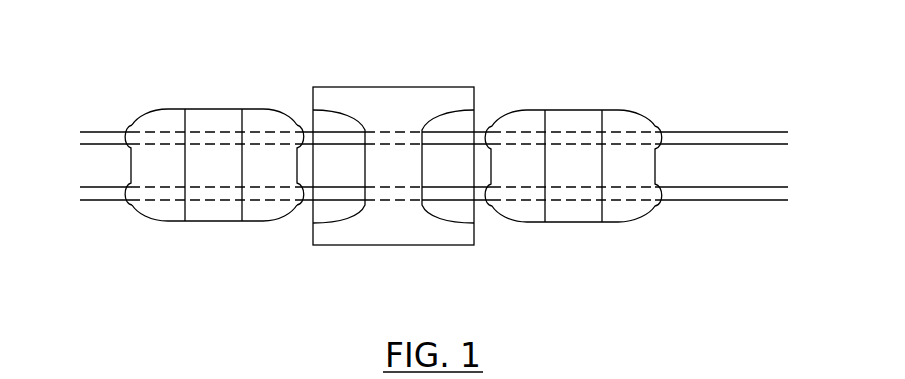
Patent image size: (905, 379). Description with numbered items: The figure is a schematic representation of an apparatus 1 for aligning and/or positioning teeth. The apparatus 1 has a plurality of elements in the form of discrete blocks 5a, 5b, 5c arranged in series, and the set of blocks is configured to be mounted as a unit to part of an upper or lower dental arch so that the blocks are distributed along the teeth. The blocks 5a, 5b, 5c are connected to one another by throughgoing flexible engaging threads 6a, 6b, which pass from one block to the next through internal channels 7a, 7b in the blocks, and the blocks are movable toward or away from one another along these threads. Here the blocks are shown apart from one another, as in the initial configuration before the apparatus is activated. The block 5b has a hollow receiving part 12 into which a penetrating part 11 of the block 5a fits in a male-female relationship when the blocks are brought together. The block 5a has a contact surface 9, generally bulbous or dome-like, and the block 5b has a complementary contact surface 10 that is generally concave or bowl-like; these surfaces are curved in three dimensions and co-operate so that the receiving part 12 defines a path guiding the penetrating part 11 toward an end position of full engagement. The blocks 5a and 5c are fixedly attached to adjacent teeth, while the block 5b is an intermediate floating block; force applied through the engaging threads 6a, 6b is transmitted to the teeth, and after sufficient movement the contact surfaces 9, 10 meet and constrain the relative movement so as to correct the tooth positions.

The apparatus 1 is at (504, 70).
The block 5a is at (210, 179).
The block 5b is at (376, 172).
The block 5c is at (632, 110).
The engaging thread 6a is at (101, 140).
The engaging thread 6b is at (90, 193).
The internal channel 7a is at (162, 137).
The internal channel 7b is at (212, 195).
The contact surface 9 is at (275, 234).
The contact surface 10 is at (358, 221).
The penetrating part 11 is at (273, 108).
The receiving part 12 is at (322, 118).